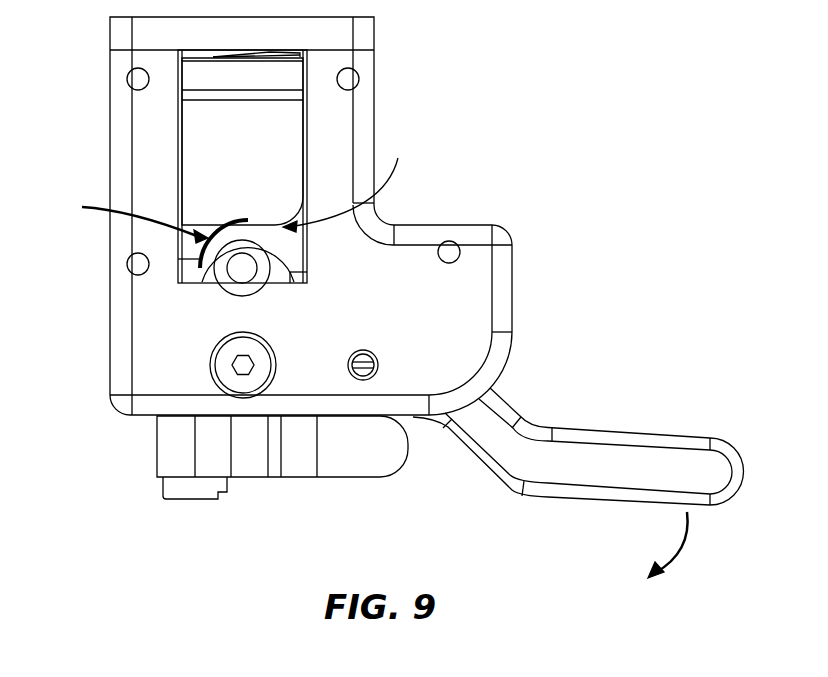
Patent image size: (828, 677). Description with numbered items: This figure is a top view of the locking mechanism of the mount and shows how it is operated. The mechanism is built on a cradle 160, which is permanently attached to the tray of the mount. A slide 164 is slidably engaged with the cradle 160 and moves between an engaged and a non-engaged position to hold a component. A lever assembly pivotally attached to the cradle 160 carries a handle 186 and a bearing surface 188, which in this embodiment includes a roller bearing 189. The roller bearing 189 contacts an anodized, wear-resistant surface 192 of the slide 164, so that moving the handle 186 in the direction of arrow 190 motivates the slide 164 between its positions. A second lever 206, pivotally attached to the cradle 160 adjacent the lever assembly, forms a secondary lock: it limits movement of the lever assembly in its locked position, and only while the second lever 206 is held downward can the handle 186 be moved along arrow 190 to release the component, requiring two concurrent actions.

The cradle 160 is at (411, 258).
The slide 164 is at (192, 124).
The handle 186 is at (615, 442).
The bearing surface 188 is at (128, 219).
The roller bearing 189 is at (203, 253).
The arrow 190 is at (680, 536).
The surface 192 is at (349, 181).
The second lever 206 is at (353, 468).